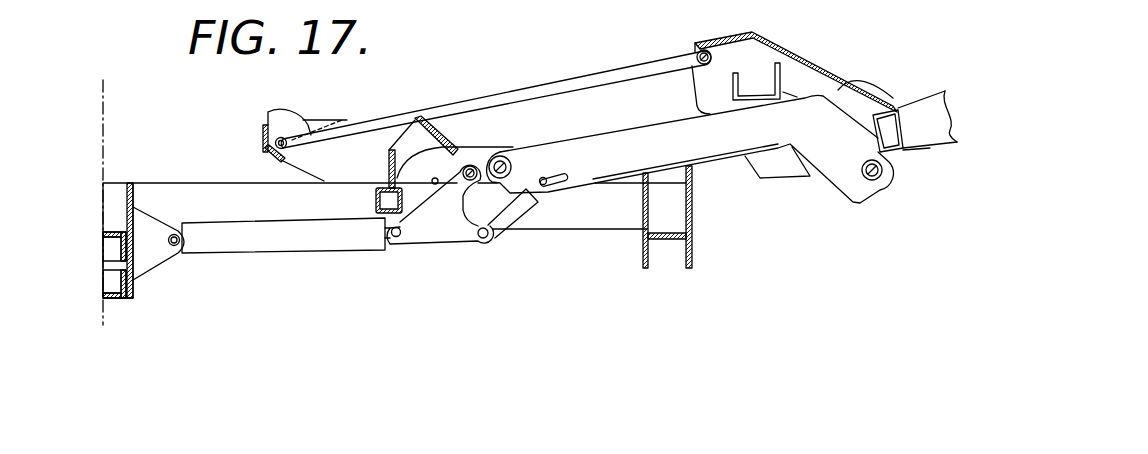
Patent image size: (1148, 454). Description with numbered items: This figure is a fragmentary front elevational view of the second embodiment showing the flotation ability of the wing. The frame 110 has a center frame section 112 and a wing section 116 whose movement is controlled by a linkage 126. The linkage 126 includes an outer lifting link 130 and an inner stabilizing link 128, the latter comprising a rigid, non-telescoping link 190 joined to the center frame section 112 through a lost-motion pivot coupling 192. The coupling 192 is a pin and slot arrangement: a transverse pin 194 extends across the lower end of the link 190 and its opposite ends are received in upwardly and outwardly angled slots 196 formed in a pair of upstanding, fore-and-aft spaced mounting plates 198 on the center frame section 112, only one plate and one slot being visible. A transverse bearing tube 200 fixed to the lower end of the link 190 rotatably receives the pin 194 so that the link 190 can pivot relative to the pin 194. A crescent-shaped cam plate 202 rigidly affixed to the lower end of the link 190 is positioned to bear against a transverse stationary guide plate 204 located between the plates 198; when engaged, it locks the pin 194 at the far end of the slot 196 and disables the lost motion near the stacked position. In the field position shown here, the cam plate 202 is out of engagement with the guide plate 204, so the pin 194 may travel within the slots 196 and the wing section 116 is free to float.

The frame 110 is at (608, 250).
The center frame section 112 is at (557, 222).
The wing section 116 is at (923, 103).
The linkage 126 is at (722, 168).
The inner stabilizing link 128 is at (545, 80).
The outer lifting link 130 is at (673, 128).
The rigid non-telescoping link 190 is at (622, 70).
The lost-motion pivot coupling 192 is at (284, 122).
The transverse pin 194 is at (266, 146).
The angled slots 196 is at (343, 120).
The mounting plates 198 is at (353, 178).
The transverse bearing tube 200 is at (288, 145).
The crescent-shaped cam plate 202 is at (282, 113).
The stationary guide plate 204 is at (263, 135).